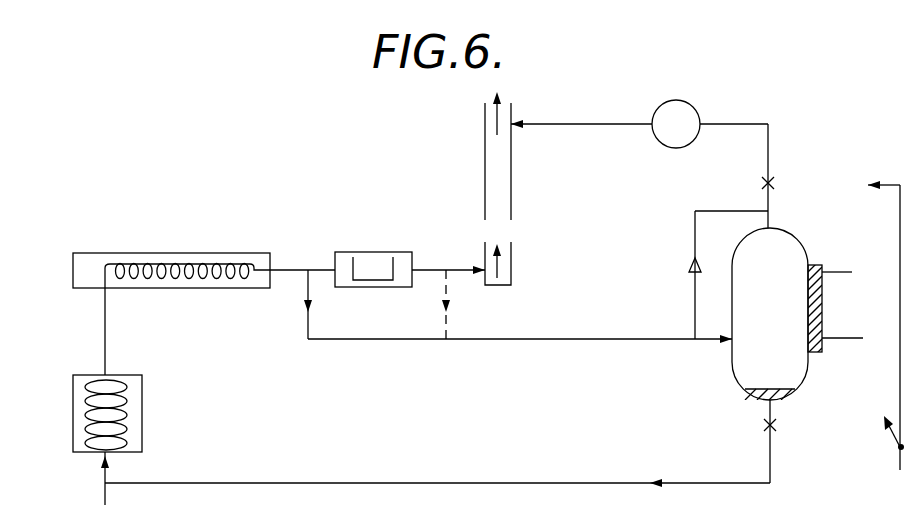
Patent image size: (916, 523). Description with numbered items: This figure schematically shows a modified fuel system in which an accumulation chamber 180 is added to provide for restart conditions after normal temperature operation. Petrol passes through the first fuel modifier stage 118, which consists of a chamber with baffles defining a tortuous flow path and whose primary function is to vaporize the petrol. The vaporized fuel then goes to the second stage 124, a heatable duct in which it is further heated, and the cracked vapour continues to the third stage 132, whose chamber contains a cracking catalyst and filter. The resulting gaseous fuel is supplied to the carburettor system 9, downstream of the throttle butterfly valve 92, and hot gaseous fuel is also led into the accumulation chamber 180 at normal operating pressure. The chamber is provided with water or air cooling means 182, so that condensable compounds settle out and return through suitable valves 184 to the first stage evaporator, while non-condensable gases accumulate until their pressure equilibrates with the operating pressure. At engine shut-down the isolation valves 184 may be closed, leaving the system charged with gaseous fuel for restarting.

The carburettor system 9 is at (513, 248).
The throttle butterfly valve 92 is at (488, 195).
The first fuel modifier stage 118 is at (73, 387).
The second stage 124 is at (214, 253).
The third stage 132 is at (425, 248).
The accumulation chamber 180 is at (808, 256).
The cooling means 182 is at (822, 350).
The valves 184 is at (770, 182).